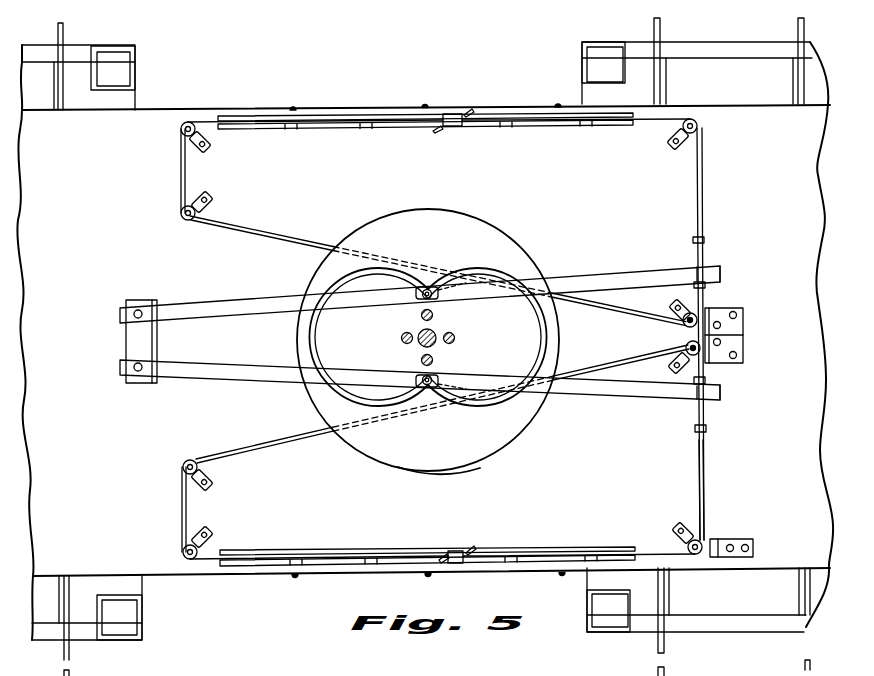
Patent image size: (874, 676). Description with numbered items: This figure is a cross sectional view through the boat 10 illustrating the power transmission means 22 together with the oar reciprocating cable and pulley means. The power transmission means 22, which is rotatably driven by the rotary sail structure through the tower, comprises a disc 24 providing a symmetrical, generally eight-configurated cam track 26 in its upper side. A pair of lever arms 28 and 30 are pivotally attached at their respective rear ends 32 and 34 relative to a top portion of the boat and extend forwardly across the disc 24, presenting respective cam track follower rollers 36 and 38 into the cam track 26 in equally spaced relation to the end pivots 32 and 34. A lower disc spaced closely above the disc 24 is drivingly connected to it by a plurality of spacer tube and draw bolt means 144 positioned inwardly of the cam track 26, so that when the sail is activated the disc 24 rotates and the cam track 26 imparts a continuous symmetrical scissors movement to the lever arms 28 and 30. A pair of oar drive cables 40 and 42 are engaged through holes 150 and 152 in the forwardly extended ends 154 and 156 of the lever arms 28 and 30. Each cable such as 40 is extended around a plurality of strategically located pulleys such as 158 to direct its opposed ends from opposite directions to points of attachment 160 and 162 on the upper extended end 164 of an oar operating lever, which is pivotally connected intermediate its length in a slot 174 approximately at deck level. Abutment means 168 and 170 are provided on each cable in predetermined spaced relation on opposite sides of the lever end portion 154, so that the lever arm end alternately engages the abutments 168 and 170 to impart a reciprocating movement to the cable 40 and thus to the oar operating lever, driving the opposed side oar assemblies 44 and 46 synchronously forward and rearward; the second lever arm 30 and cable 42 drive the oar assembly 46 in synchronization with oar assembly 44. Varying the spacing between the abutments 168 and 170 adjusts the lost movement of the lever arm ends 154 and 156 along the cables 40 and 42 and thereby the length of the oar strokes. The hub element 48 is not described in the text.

The boat 10 is at (217, 577).
The power transmission means 22 is at (509, 183).
The disc 24 is at (407, 472).
The cam track 26 is at (320, 349).
The lever arm 28 is at (270, 376).
The lever arm 30 is at (270, 311).
The rear end pivot 32 is at (138, 376).
The rear end pivot 34 is at (138, 310).
The cam track follower roller 36 is at (427, 390).
The cam track follower roller 38 is at (414, 286).
The oar drive cable 40 is at (707, 494).
The oar drive cable 42 is at (737, 190).
The oar assembly 44 is at (145, 621).
The oar assembly 46 is at (142, 98).
The hub 48 is at (438, 333).
The spacer tube and draw bolt means 144 is at (437, 359).
The hole 150 is at (722, 393).
The hole 152 is at (722, 270).
The forwardly extended end 154 is at (706, 384).
The forwardly extended end 156 is at (712, 266).
The pulley 158 is at (686, 343).
The point of attachment 160 is at (474, 552).
The point of attachment 162 is at (447, 553).
The upper extended end 164 is at (461, 552).
The abutment means 168 is at (708, 430).
The abutment means 170 is at (743, 361).
The slot 174 is at (255, 116).